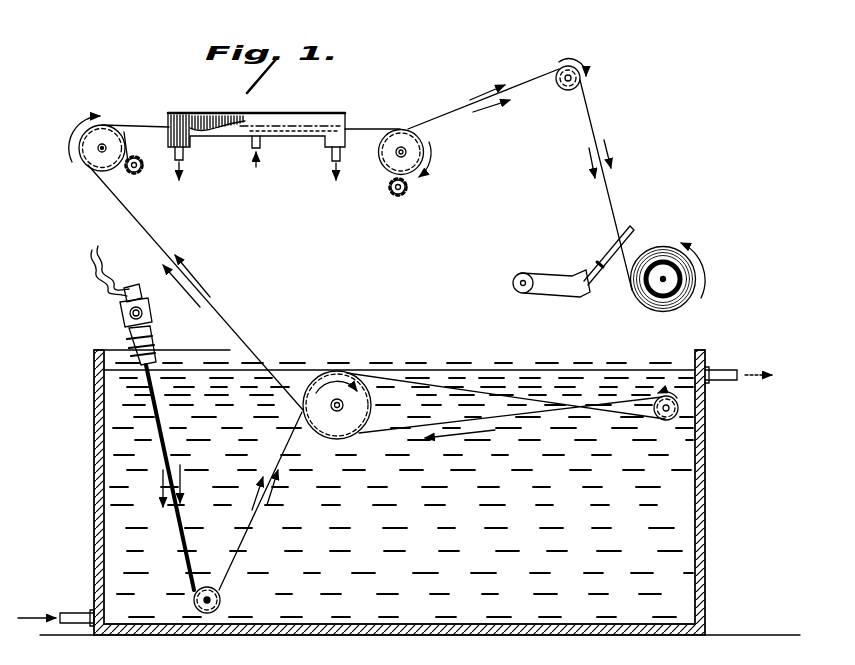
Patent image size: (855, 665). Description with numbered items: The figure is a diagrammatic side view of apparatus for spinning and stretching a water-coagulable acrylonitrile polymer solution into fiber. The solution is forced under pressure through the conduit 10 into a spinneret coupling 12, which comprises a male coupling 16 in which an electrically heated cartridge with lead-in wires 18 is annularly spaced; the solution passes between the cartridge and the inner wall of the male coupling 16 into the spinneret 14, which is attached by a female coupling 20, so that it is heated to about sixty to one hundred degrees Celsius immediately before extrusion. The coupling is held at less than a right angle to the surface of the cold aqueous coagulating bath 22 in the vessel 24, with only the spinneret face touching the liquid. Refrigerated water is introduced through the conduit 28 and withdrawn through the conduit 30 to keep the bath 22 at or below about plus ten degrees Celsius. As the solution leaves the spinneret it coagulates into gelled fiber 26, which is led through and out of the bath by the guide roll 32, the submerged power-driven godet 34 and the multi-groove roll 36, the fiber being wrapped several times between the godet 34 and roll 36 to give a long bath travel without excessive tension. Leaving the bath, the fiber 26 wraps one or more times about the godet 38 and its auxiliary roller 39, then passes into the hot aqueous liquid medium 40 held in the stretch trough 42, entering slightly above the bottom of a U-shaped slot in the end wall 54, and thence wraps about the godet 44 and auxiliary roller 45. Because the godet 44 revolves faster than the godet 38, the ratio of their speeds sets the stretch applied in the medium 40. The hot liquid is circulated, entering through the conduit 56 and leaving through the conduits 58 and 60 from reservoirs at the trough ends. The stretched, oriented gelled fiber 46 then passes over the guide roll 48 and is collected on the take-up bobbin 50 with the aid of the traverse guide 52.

The conduit 10 is at (121, 315).
The spinneret coupling 12 is at (124, 295).
The spinneret 14 is at (151, 368).
The male coupling 16 is at (152, 313).
The lead-in wires 18 is at (104, 264).
The female coupling 20 is at (130, 350).
The aqueous coagulating bath 22 is at (505, 392).
The vessel 24 is at (706, 502).
The fiber 26 is at (240, 340).
The conduit 28 is at (68, 612).
The conduit 30 is at (720, 370).
The guide roll 32 is at (210, 613).
The power-driven godet 34 is at (348, 374).
The multi-groove roll 36 is at (677, 413).
The godet 38 is at (98, 158).
The auxiliary roller 39 is at (137, 175).
The hot aqueous liquid medium 40 is at (296, 124).
The stretch trough 42 is at (192, 113).
The godet 44 is at (394, 163).
The auxiliary roller 45 is at (406, 192).
The stretched gelled fiber 46 is at (450, 113).
The guide roll 48 is at (567, 91).
The take-up bobbin 50 is at (643, 298).
The traverse guide 52 is at (584, 269).
The end wall 54 is at (168, 118).
The conduit 56 is at (261, 146).
The conduit 58 is at (189, 152).
The conduit 60 is at (328, 162).